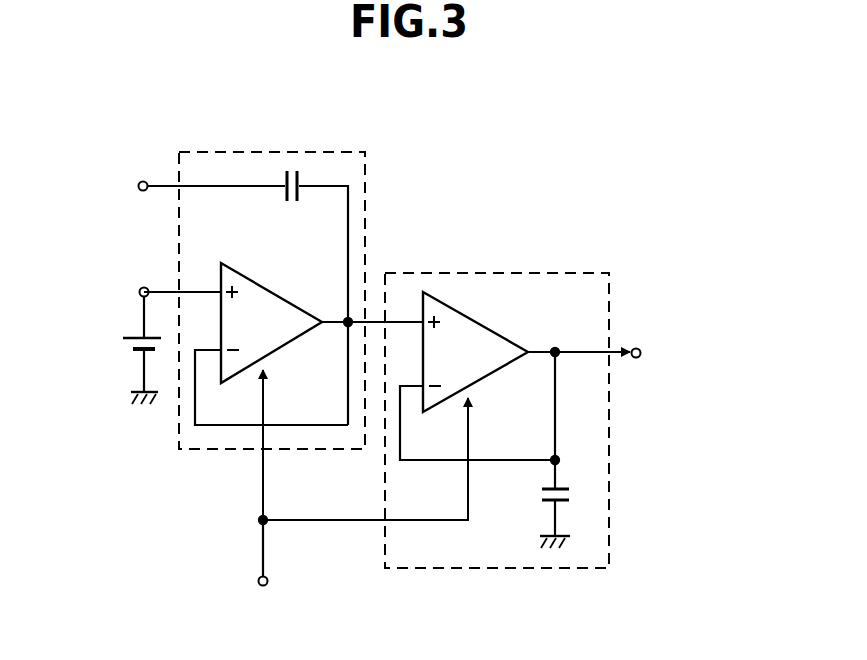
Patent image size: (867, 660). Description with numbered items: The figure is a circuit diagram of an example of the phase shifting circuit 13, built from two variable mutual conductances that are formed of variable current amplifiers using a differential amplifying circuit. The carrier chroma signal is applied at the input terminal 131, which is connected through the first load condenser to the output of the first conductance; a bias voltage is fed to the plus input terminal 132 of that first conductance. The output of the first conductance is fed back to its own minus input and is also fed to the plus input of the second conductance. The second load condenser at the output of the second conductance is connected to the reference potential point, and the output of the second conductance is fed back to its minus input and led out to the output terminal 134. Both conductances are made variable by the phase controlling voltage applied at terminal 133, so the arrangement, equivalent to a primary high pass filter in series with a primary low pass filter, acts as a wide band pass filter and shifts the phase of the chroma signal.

The phase shifting circuit 13 is at (508, 194).
The input terminal 131 is at (146, 181).
The +input terminal 132 is at (143, 287).
The phase controlling voltage terminal 133 is at (258, 578).
The output terminal 134 is at (636, 348).